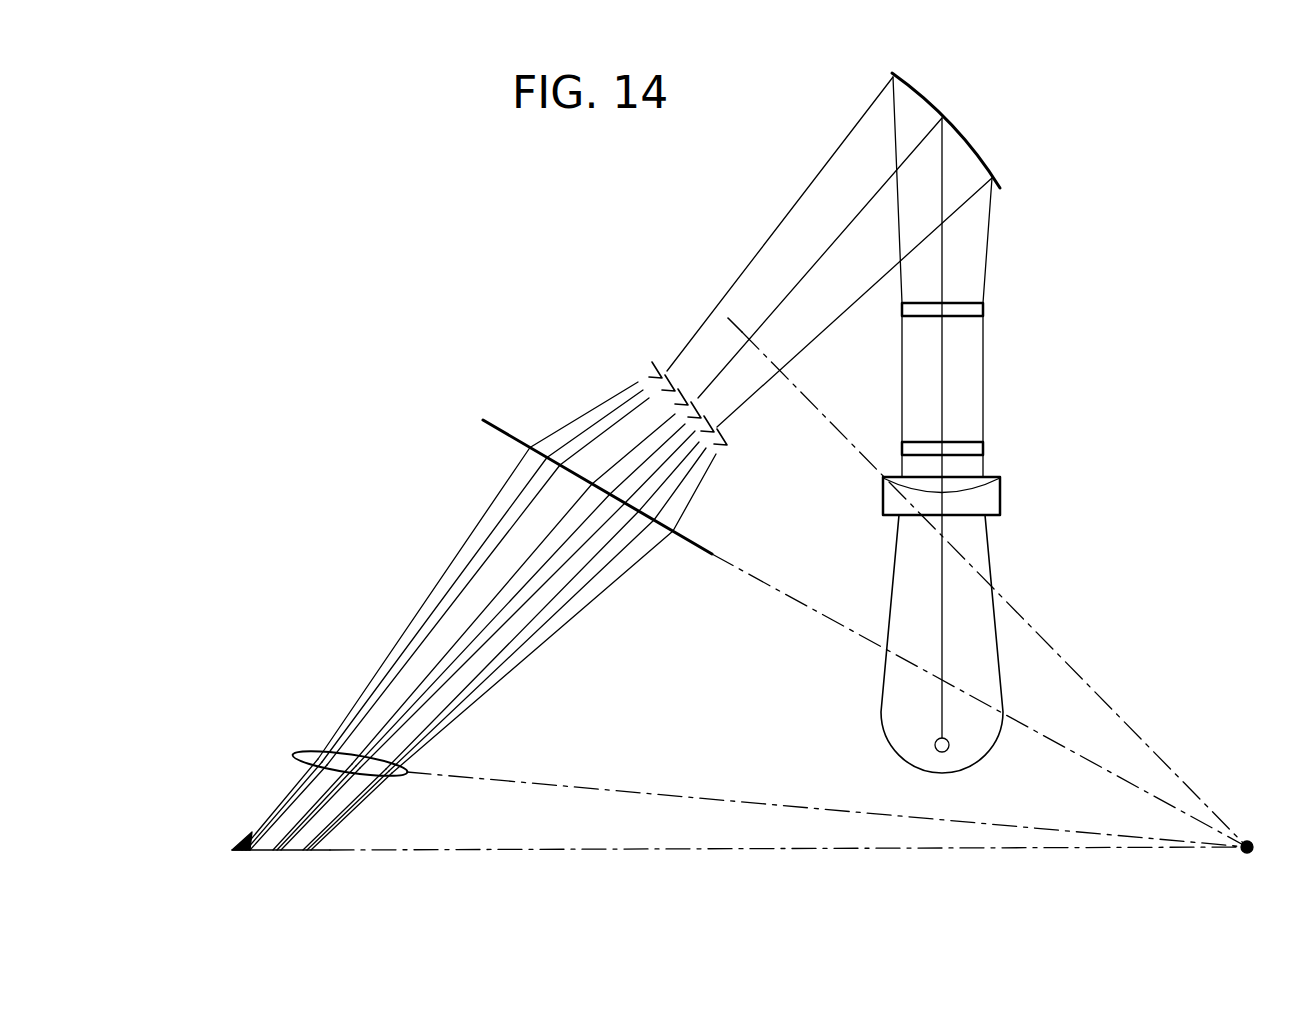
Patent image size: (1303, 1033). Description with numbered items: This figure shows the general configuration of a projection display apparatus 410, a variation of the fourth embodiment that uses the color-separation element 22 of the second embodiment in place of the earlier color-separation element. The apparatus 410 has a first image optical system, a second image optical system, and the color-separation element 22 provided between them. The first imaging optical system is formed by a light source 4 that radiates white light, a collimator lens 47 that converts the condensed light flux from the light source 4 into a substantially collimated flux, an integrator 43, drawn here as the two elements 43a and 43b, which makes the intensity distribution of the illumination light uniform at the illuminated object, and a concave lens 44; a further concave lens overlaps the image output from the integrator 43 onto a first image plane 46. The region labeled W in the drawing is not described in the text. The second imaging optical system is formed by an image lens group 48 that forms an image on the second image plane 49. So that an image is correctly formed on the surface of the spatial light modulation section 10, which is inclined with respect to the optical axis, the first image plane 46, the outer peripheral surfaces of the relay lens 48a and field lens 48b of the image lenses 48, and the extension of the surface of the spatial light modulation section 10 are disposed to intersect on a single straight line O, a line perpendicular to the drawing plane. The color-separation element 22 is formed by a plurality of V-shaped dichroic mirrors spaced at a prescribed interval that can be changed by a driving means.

The projection display apparatus 410 is at (522, 280).
The color-separation element 22 is at (653, 368).
The first image plane 46 is at (735, 320).
The concave lens 44 is at (972, 150).
The integrator lens element 43b is at (985, 311).
The integrator 43 is at (1021, 385).
The integrator lens element 43a is at (991, 438).
The collimator lens 47 is at (1002, 496).
The wafer / workpiece region W is at (990, 556).
The light source 4 is at (986, 760).
The straight line O is at (1266, 857).
The image lens group 48 is at (469, 600).
The relay lens 48a is at (543, 487).
The field lens 48b is at (304, 754).
The second image plane 49 is at (242, 846).
The spatial light modulation section 10 is at (282, 852).